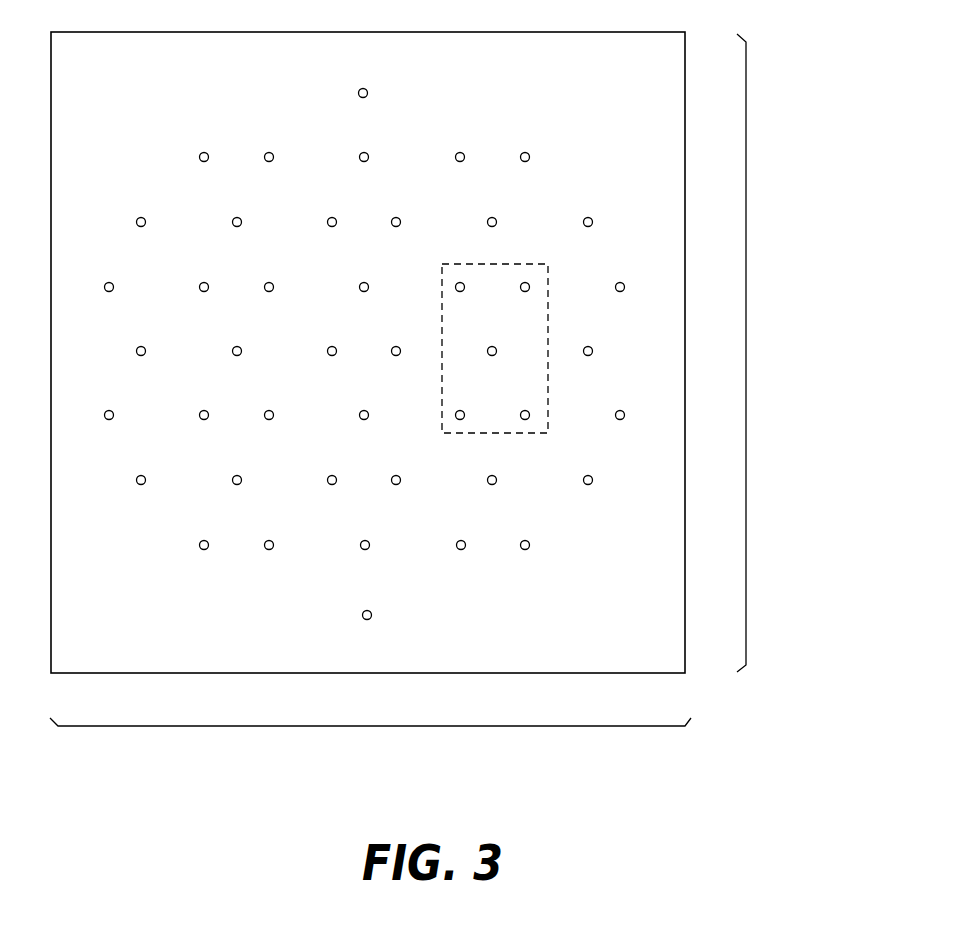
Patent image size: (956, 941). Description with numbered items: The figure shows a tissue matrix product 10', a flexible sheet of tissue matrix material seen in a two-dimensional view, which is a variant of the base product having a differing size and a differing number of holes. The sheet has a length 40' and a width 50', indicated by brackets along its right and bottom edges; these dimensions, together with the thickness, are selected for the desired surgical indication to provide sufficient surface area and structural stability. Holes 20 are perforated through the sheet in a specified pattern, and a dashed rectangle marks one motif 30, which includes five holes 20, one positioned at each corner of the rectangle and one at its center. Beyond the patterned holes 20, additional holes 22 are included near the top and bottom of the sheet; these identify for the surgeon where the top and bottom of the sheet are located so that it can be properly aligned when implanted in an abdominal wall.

The tissue matrix product 10' is at (401, 352).
The holes 20 is at (381, 546).
The additional hole 22 is at (373, 88).
The motif 30 is at (525, 254).
The length 40' is at (791, 353).
The width 50' is at (370, 764).